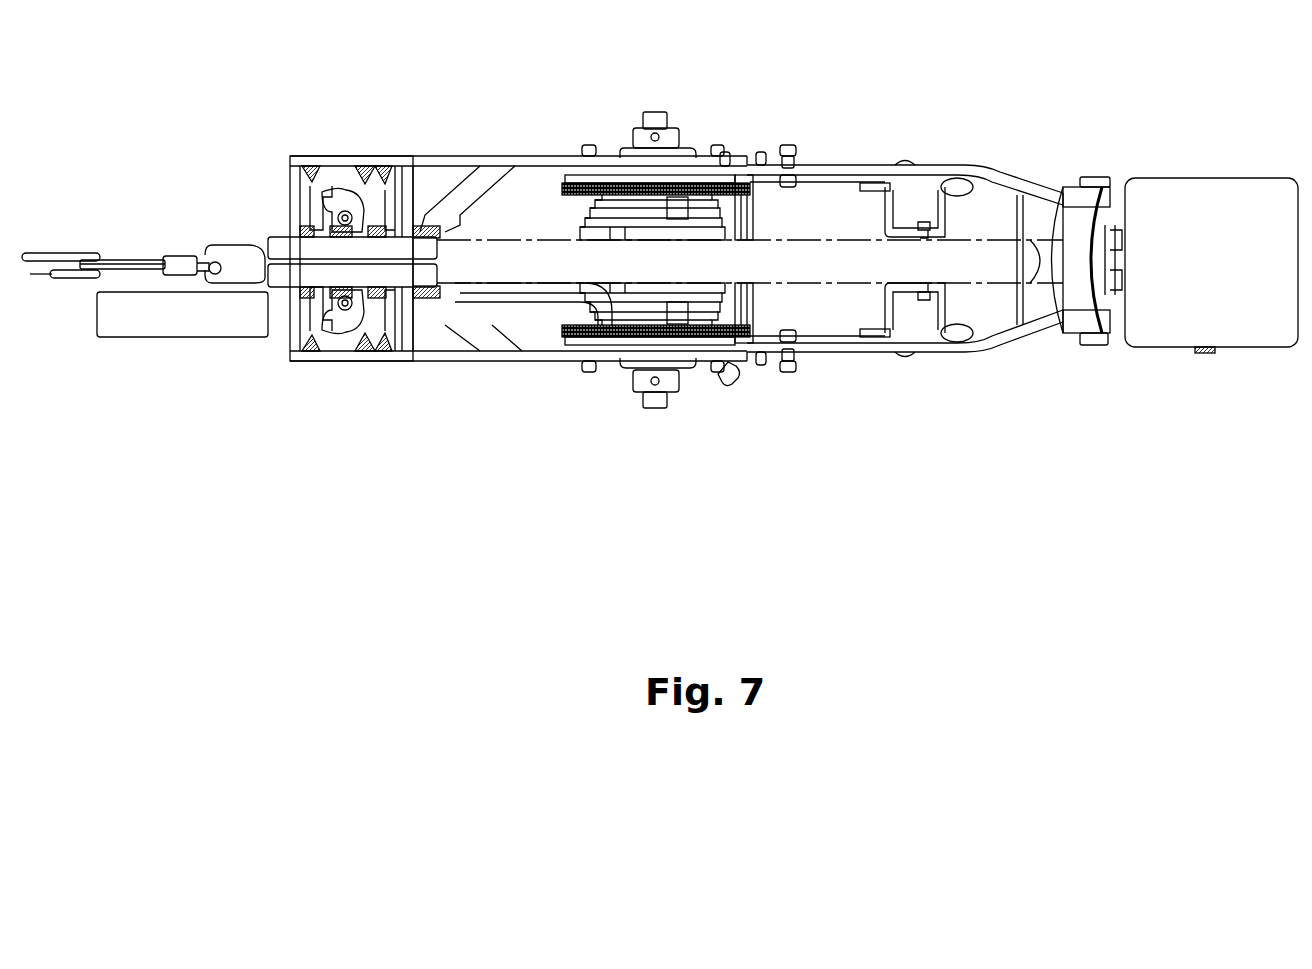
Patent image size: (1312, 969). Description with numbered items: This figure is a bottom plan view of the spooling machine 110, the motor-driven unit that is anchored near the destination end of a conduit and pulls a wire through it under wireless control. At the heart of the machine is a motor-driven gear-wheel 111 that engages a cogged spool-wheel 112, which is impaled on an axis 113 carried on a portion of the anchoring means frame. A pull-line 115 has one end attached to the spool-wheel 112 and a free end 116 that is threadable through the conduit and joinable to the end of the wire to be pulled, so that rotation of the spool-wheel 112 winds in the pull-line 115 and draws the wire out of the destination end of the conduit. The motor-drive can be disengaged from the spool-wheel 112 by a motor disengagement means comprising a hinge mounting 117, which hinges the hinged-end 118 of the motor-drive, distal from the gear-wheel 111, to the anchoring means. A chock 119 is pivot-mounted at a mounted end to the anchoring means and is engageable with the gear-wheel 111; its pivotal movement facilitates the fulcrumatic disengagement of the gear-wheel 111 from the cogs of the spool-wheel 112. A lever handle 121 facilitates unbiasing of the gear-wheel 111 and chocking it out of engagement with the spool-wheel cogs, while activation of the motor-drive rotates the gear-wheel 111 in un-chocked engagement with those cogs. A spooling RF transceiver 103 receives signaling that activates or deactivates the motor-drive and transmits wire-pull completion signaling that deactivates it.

The spooling machine 110 is at (300, 80).
The free end 116 is at (125, 255).
The spooling RF transceiver 103 is at (342, 190).
The lever handle 121 is at (172, 318).
The cogged spool-wheel 112 is at (560, 185).
The motor-driven gear-wheel 111 is at (632, 190).
The axis 113 is at (655, 118).
The chock 119 is at (748, 186).
The hinge mounting 117 is at (925, 232).
The hinged-end 118 is at (1000, 215).
The pull-line 115 is at (633, 327).